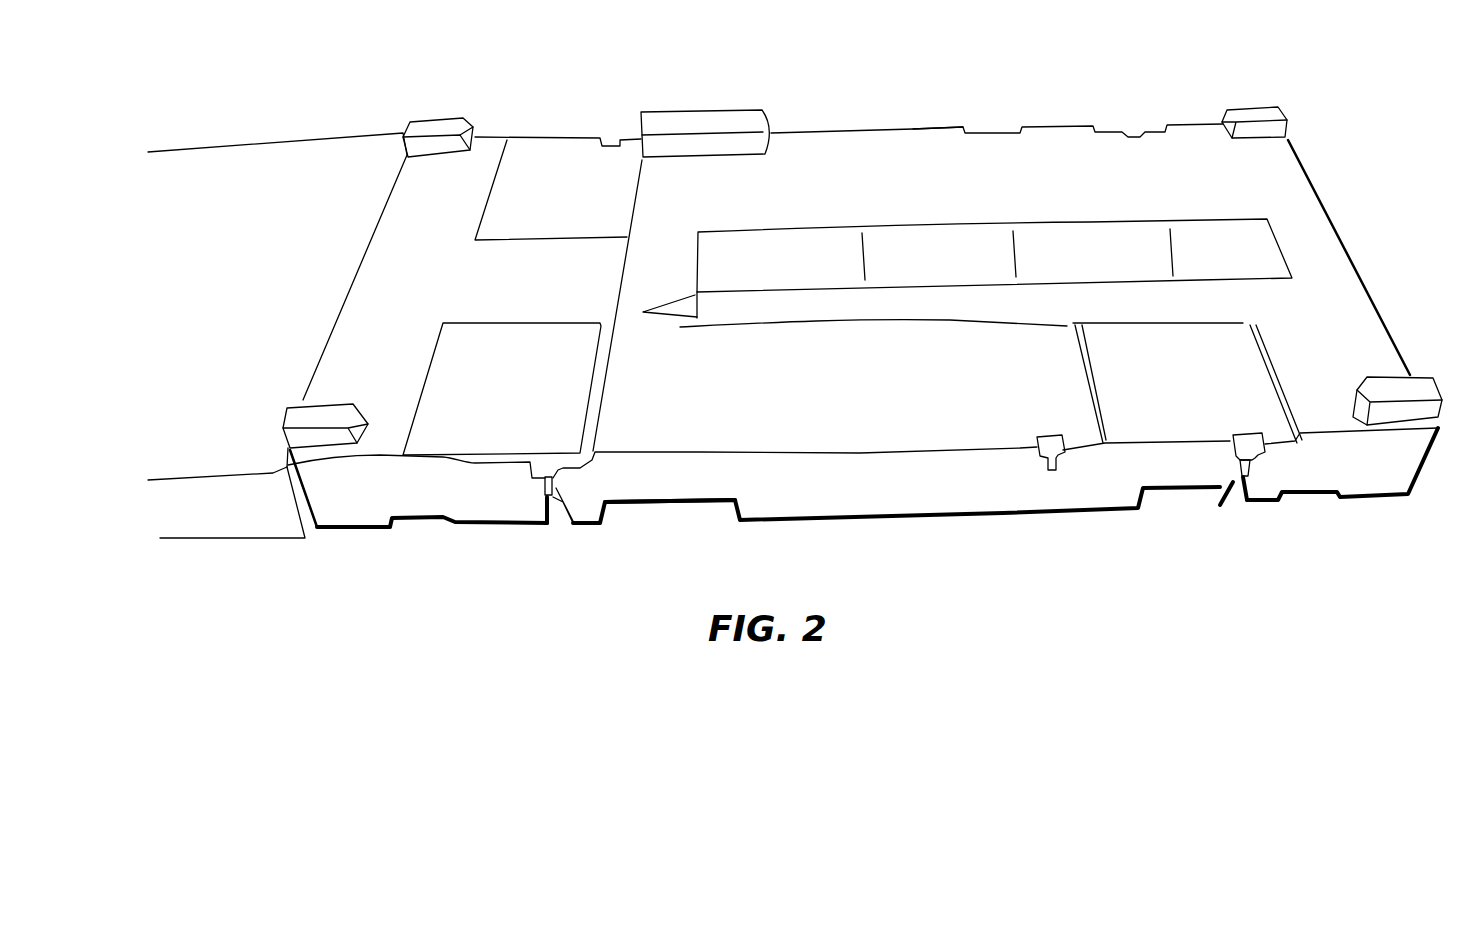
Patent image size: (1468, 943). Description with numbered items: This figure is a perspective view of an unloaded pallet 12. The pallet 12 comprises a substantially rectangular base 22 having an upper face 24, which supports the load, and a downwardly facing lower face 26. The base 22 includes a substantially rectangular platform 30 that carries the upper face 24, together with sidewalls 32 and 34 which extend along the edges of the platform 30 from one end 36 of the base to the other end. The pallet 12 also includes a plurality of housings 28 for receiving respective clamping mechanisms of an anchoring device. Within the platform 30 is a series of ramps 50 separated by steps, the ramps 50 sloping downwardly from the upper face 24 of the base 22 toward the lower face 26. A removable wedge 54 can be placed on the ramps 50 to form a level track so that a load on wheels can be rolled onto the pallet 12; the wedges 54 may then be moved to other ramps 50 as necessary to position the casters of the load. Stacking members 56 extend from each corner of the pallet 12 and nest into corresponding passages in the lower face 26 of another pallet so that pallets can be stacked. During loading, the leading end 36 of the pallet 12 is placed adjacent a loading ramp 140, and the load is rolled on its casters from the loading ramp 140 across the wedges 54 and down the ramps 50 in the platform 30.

The pallet 12 is at (1028, 60).
The base 22 is at (886, 127).
The upper face 24 is at (913, 150).
The lower face 26 is at (863, 520).
The housing 28 is at (545, 525).
The platform 30 is at (1317, 195).
The sidewall 32 is at (778, 495).
The sidewall 34 is at (803, 128).
The end of the base 36 is at (388, 198).
The ramp 50 is at (578, 137).
The removable wedge 54 is at (563, 201).
The stacking member 56 is at (443, 118).
The loading ramp 140 is at (258, 540).